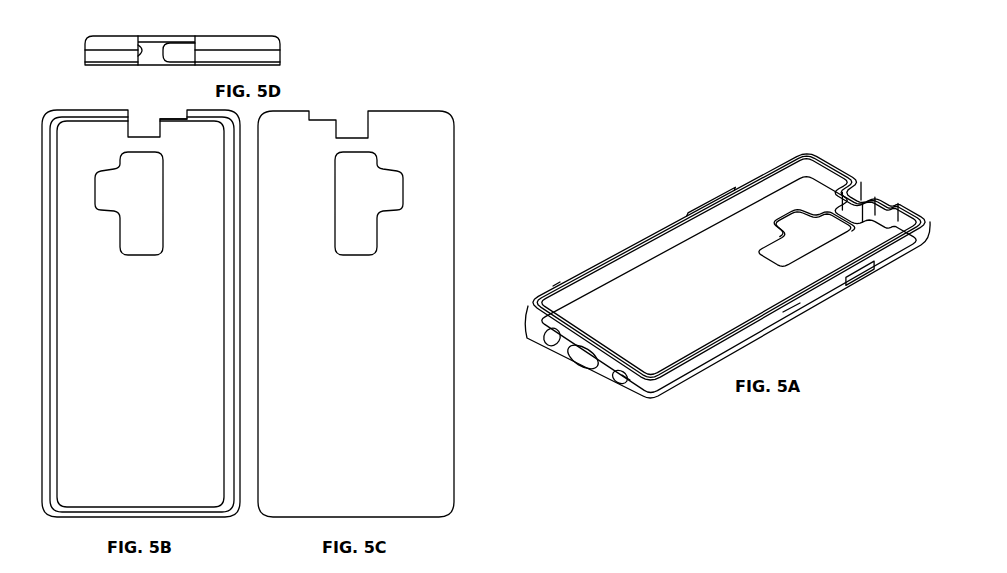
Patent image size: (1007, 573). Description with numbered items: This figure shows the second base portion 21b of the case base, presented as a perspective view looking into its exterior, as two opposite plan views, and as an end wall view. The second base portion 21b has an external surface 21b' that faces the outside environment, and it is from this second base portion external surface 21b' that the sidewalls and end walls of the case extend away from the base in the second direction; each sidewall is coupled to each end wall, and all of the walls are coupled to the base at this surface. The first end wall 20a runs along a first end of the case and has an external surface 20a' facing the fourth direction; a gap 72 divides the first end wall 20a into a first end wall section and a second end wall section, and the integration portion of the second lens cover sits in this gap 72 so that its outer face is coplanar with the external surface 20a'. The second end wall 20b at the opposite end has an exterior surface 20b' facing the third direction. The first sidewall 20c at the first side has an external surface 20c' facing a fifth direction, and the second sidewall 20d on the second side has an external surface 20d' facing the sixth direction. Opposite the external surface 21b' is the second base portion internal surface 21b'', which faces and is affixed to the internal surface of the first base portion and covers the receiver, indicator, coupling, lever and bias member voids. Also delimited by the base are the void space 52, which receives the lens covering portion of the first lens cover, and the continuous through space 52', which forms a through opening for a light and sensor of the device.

In FIG. 5A, the first end wall 20a is at (743, 247).
In FIG. 5D, the external surface of first end wall 20a' is at (182, 38).
In FIG. 5A, the second end wall 20b is at (575, 367).
In FIG. 5A, the exterior surface of second end wall 20b' is at (657, 397).
In FIG. 5A, the first sidewall 20c is at (893, 303).
In FIG. 5A, the external surface of first sidewall 20c' is at (827, 331).
In FIG. 5A, the second sidewall 20d is at (641, 218).
In FIG. 5A, the external surface of second sidewall 20d' is at (536, 257).
In FIG. 5A, the second base portion 21b is at (637, 210).
In FIG. 5B, the second base portion external surface 21b' is at (158, 322).
In FIG. 5A, the second base portion external surface 21b' is at (690, 191).
In FIG. 5C, the second base portion internal surface 21b'' is at (401, 314).
In FIG. 5A, the void space 52 is at (805, 187).
In FIG. 5A, the through space 52' is at (796, 173).
In FIG. 5D, the gap 72 is at (160, 48).
In FIG. 5A, the gap 72 is at (873, 199).